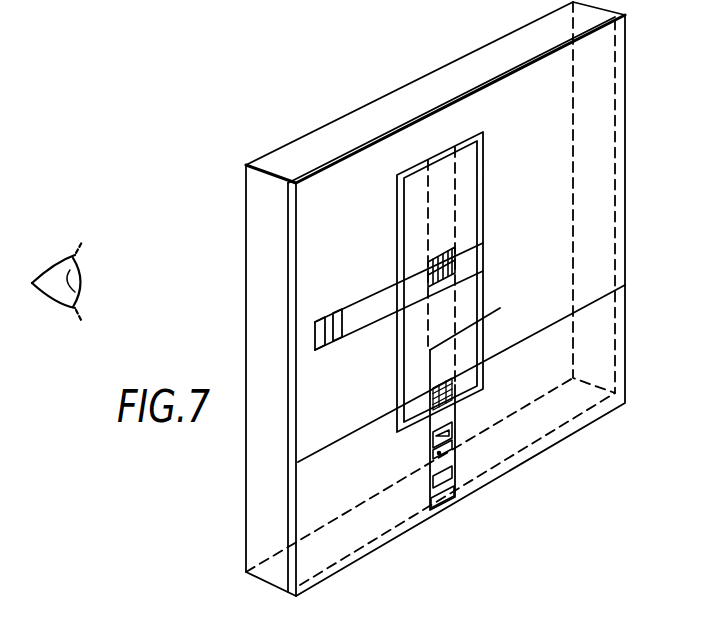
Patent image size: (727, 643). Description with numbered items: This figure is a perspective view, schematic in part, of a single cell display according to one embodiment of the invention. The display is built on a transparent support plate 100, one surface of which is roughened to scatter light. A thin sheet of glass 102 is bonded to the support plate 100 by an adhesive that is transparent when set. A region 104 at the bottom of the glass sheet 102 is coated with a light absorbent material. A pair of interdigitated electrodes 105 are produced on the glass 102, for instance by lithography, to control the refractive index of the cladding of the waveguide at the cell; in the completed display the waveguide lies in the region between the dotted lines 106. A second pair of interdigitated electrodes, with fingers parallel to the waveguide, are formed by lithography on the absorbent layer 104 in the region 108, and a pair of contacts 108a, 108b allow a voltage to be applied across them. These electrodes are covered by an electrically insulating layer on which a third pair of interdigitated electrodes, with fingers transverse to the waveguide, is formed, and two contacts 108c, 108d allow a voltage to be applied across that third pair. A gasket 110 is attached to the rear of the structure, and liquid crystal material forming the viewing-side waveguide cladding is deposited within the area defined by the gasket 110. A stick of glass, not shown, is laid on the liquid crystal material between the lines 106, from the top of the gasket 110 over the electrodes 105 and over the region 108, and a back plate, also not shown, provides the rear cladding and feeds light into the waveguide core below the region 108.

The support plate 100 is at (345, 123).
The thin sheet of glass 102 is at (292, 208).
The region coated with light absorbent material 104 is at (340, 530).
The pair of interdigitated electrodes 105 is at (428, 249).
The dotted lines 106 is at (457, 303).
The region 108 is at (455, 393).
The contact 108a is at (448, 430).
The contact 108b is at (433, 455).
The contact 108c is at (433, 484).
The contact 108d is at (440, 503).
The gasket 110 is at (422, 162).